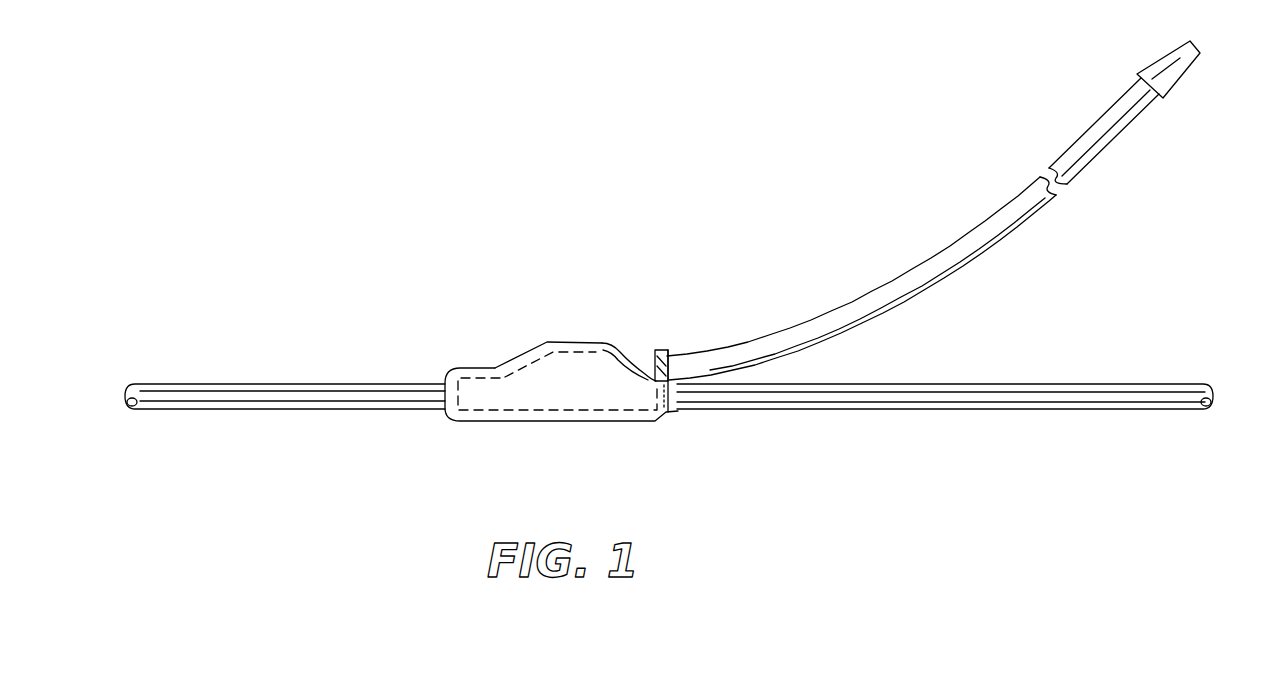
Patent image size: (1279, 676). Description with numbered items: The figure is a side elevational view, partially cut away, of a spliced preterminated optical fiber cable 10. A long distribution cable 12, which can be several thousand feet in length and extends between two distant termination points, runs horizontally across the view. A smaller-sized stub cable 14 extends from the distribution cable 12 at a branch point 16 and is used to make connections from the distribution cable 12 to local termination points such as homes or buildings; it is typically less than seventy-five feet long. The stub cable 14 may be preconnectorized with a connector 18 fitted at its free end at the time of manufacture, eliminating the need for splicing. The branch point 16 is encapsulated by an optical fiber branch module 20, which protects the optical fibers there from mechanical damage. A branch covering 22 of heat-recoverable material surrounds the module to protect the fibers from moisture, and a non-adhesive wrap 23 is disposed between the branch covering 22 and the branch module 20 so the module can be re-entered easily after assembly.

The spliced preterminated optical fiber cable 10 is at (685, 264).
The distribution cable 12 is at (287, 383).
The stub cable 14 is at (876, 290).
The branch point 16 is at (552, 342).
The connector 18 is at (1178, 98).
The optical fiber branch module 20 is at (627, 421).
The branch covering 22 is at (510, 358).
The non-adhesive wrap 23 is at (648, 366).